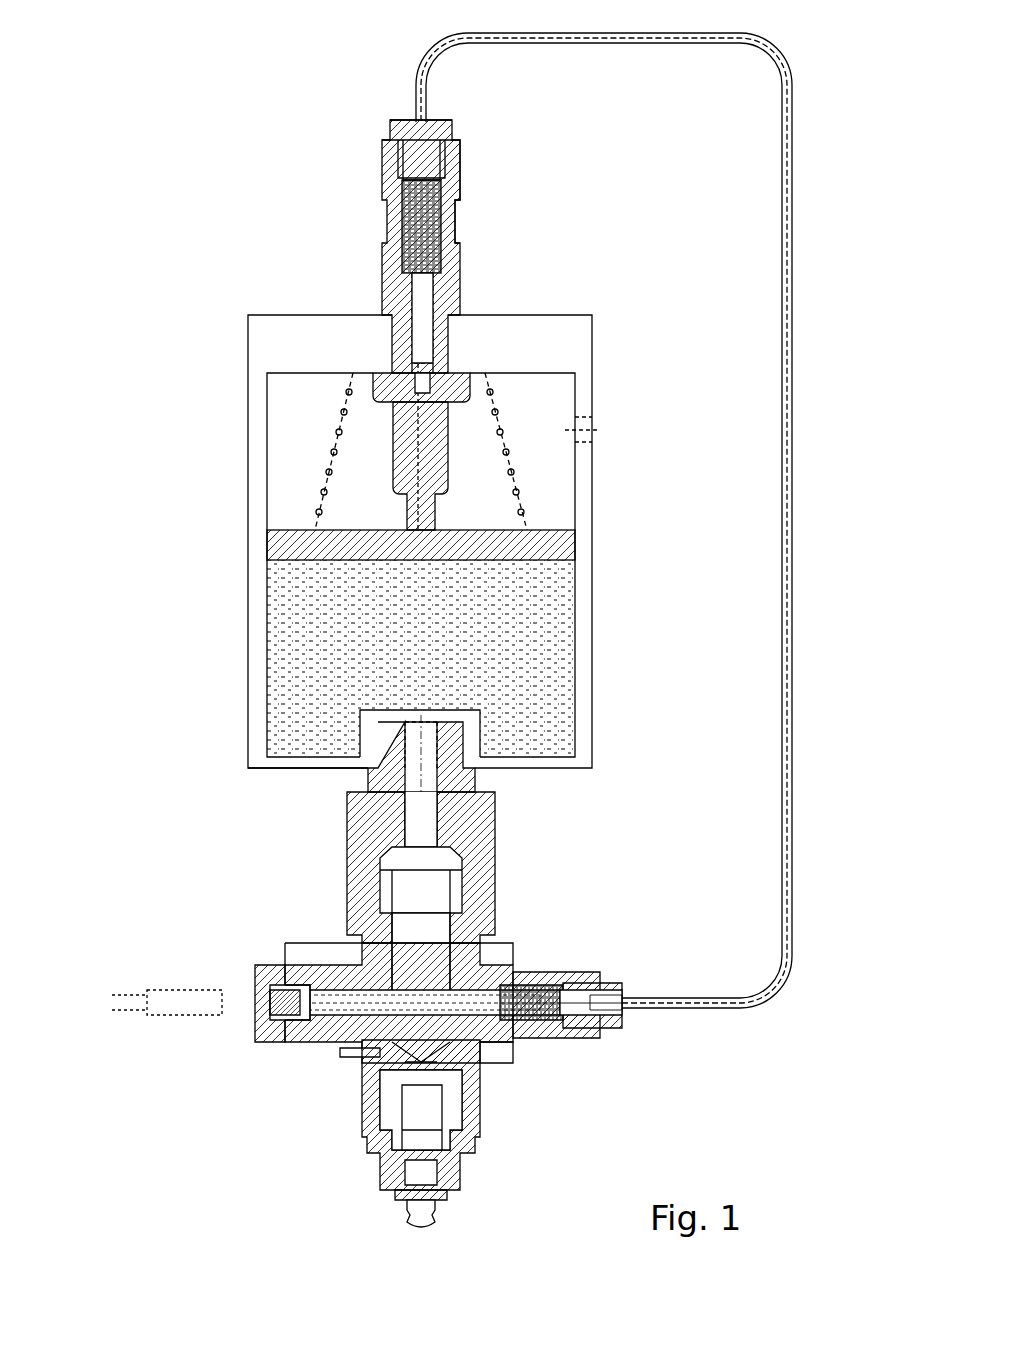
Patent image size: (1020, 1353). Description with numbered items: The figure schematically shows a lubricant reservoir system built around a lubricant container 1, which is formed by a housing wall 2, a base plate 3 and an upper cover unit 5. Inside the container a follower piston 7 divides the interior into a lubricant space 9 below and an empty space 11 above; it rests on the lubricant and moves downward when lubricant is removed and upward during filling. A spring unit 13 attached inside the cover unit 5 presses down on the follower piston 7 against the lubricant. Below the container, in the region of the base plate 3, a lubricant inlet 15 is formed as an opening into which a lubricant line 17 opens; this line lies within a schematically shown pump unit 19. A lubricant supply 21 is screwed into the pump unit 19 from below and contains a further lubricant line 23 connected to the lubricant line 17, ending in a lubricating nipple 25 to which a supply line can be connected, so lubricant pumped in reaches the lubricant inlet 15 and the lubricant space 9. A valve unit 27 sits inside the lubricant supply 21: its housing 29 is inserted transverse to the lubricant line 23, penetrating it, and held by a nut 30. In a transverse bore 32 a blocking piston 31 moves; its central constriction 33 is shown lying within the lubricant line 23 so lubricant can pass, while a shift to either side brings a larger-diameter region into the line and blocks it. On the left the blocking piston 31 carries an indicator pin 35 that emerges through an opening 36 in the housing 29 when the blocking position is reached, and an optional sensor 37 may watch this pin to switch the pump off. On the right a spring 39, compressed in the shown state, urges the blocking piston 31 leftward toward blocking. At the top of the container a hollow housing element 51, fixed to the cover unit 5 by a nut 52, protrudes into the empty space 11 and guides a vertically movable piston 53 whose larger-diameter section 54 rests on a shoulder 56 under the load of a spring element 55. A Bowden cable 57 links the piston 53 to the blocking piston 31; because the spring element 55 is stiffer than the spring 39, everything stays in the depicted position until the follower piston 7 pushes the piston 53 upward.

The lubricant container 1 is at (205, 192).
The housing wall 2 is at (257, 500).
The base plate 3 is at (274, 765).
The upper cover unit 5 is at (313, 326).
The follower piston 7 is at (558, 549).
The lubricant space 9 is at (522, 649).
The empty space 11 is at (545, 424).
The spring unit 13 is at (510, 457).
The lubricant inlet 15 is at (410, 720).
The lubricant line 17 is at (432, 762).
The pump unit 19 is at (358, 823).
The lubricant supply 21 is at (470, 1100).
The lubricant line 23 is at (432, 883).
The lubricating nipple 25 is at (430, 1205).
The valve unit 27 is at (632, 1043).
The housing 29 is at (312, 957).
The nut 30 is at (497, 1058).
The blocking piston 31 is at (340, 1053).
The bore 32 is at (350, 1012).
The constriction 33 is at (424, 988).
The indicator pin 35 is at (266, 1005).
The opening 36 is at (258, 1000).
The sensor 37 is at (170, 1010).
The spring 39 is at (548, 986).
The housing element 51 is at (448, 155).
The nut 52 is at (455, 375).
The piston 53 is at (415, 458).
The section having a larger diameter 54 is at (435, 301).
The spring element 55 is at (410, 216).
The shoulder 56 is at (401, 331).
The Bowden cable 57 is at (783, 410).